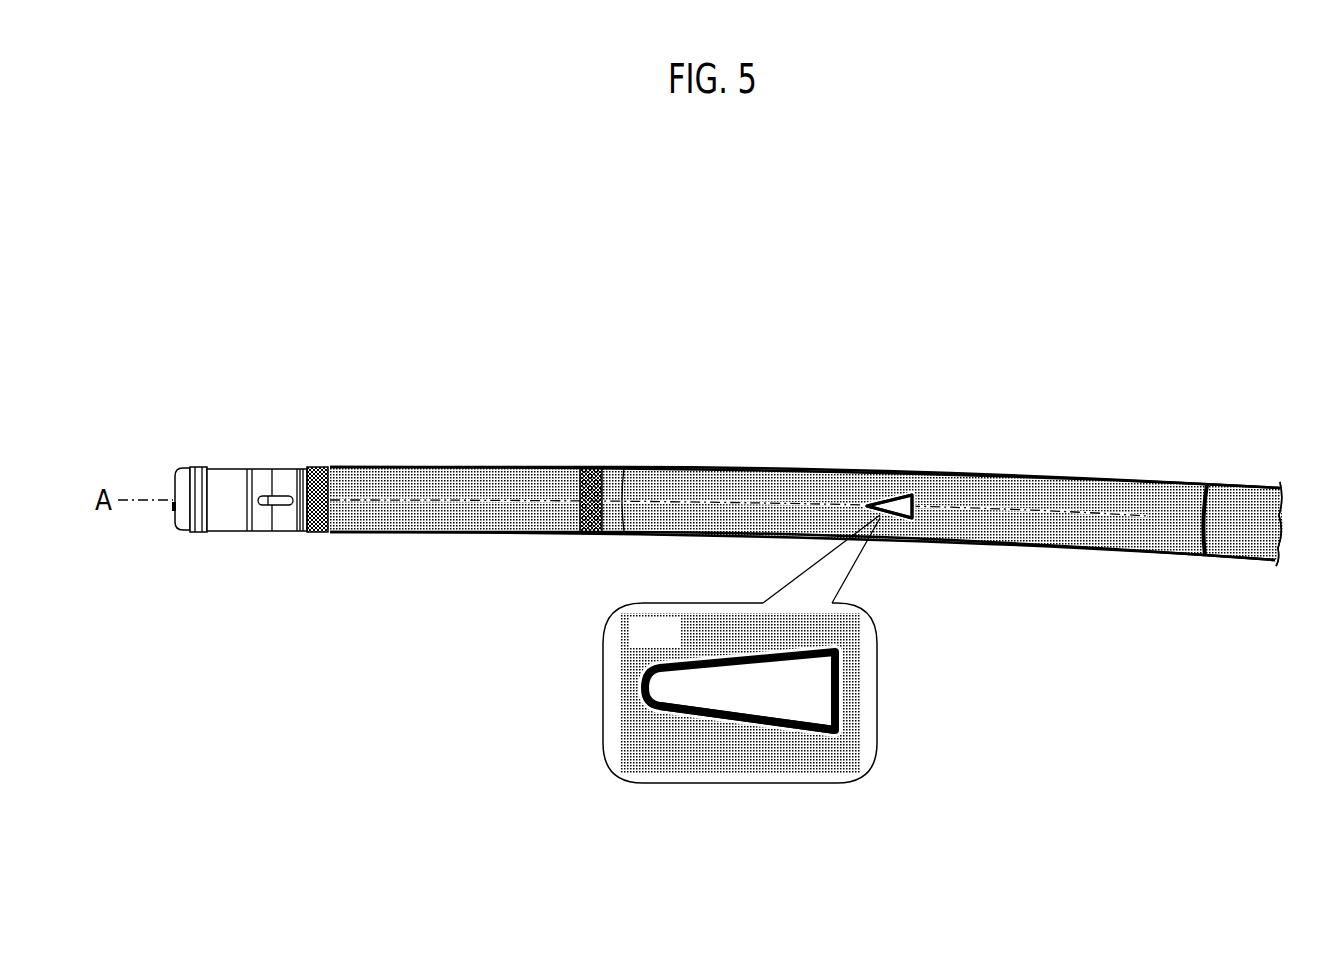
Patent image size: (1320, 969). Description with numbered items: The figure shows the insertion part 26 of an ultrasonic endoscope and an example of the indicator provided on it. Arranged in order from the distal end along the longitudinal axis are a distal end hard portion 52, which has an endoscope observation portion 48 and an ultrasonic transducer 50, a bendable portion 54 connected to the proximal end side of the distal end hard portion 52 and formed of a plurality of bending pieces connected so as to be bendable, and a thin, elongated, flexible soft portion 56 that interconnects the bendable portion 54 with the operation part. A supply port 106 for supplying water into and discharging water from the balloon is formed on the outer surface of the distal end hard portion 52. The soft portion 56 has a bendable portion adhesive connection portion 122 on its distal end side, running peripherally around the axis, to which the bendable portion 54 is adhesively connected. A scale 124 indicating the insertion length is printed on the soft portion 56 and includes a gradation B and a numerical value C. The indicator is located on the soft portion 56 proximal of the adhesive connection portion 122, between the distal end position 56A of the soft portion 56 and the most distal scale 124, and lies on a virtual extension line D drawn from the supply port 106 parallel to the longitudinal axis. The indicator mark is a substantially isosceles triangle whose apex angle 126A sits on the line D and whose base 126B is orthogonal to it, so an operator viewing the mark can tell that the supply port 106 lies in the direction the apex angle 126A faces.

The insertion part 26 is at (907, 298).
The endoscope observation portion 48 is at (180, 466).
The ultrasonic transducer 50 is at (226, 478).
The distal end hard portion 52 is at (250, 455).
The bendable portion 54 is at (455, 457).
The soft portion 56 is at (1032, 467).
The distal end position of the soft portion 56A is at (580, 525).
The supply port 106 is at (289, 506).
The bendable portion adhesive connection portion 122 is at (592, 467).
The scale 124 is at (1265, 475).
The apex angle 126A is at (645, 690).
The base 126B is at (838, 690).
The gradation B is at (1201, 527).
The numerical value C is at (1235, 500).
The virtual extension line D is at (1098, 517).